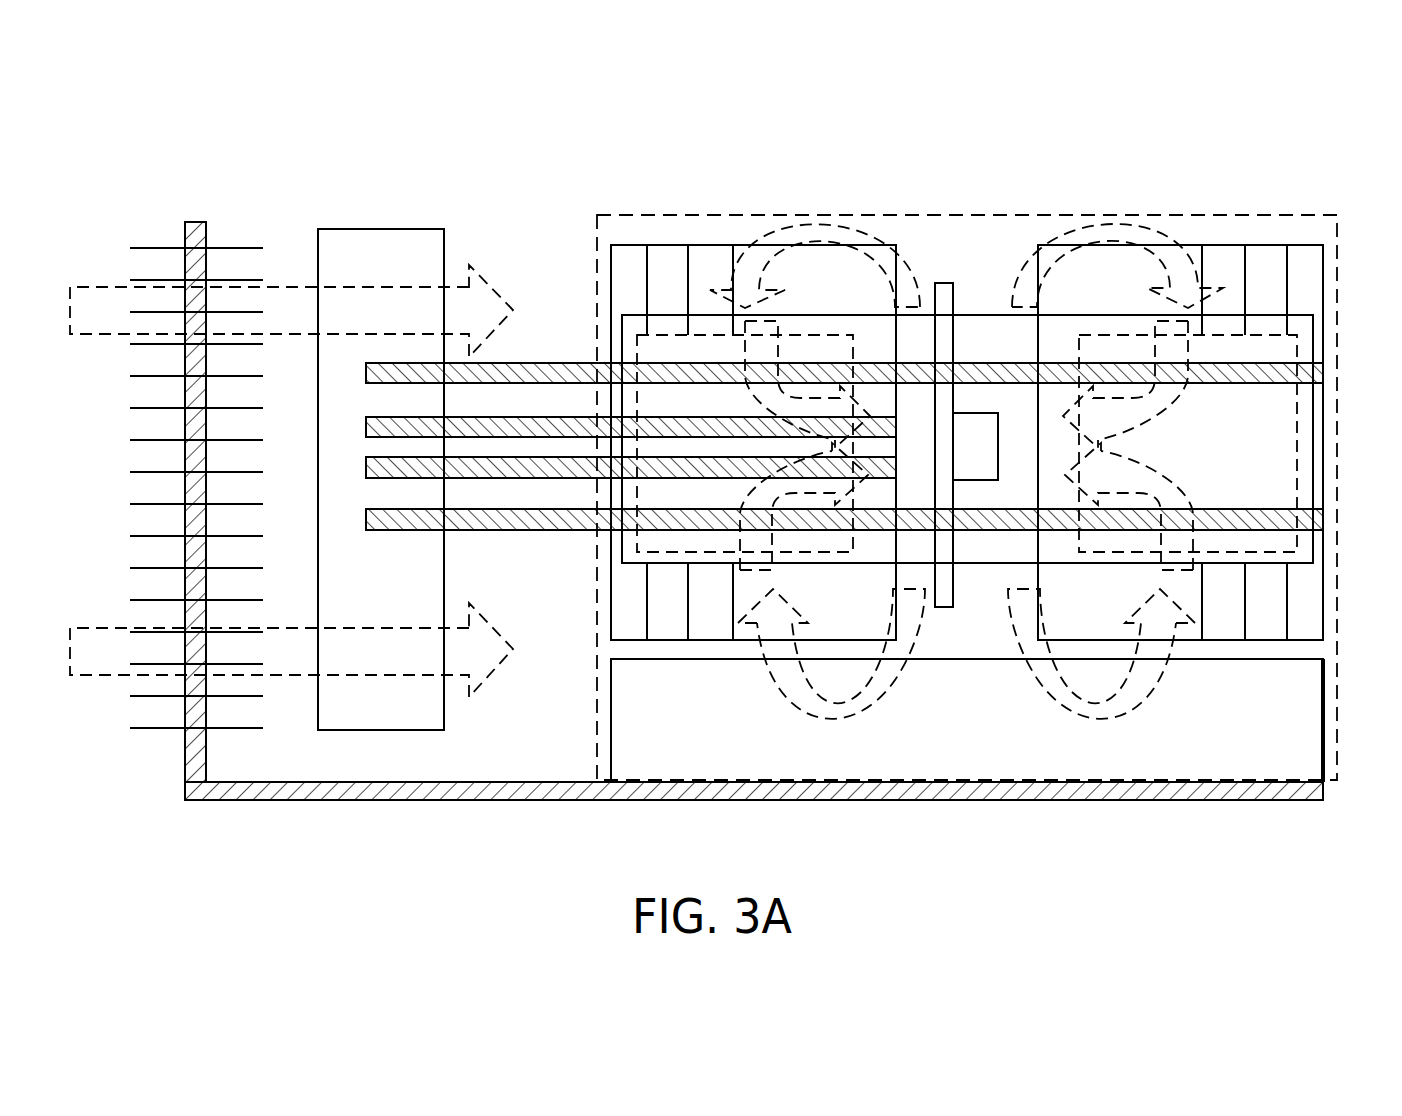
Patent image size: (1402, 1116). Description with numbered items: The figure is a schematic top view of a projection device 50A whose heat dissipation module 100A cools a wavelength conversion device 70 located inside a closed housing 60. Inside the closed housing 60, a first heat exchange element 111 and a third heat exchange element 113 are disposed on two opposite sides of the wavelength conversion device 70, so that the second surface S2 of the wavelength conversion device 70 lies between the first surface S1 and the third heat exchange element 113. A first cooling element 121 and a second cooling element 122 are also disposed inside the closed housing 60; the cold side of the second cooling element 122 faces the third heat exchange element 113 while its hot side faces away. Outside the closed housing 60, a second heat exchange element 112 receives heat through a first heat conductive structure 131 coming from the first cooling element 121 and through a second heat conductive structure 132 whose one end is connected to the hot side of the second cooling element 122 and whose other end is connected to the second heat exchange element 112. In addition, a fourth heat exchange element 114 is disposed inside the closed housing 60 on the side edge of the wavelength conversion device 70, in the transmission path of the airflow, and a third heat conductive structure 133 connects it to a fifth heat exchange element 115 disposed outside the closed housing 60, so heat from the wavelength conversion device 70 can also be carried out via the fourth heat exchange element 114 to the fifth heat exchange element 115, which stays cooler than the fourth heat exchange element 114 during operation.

The heat dissipation module 100A is at (92, 188).
The fifth heat exchange element 115 is at (162, 247).
The second heat exchange element 112 is at (385, 242).
The second heat conductive structure 132 is at (565, 372).
The first heat conductive structure 131 is at (582, 427).
The third heat conductive structure 133 is at (400, 800).
The first heat exchange element 111 is at (627, 255).
The third heat exchange element 113 is at (1263, 258).
The first cooling element 121 is at (697, 345).
The second cooling element 122 is at (1280, 350).
The fourth heat exchange element 114 is at (1312, 723).
The closed housing 60 is at (1187, 214).
The wavelength conversion device 70 is at (977, 430).
The first surface S1 is at (920, 296).
The second surface S2 is at (969, 300).
The projection device 50A is at (1392, 842).